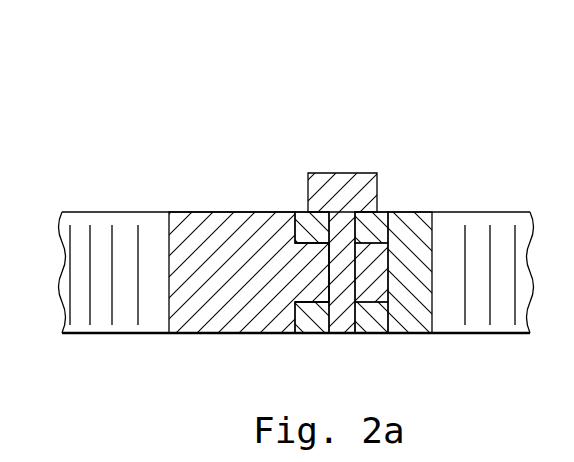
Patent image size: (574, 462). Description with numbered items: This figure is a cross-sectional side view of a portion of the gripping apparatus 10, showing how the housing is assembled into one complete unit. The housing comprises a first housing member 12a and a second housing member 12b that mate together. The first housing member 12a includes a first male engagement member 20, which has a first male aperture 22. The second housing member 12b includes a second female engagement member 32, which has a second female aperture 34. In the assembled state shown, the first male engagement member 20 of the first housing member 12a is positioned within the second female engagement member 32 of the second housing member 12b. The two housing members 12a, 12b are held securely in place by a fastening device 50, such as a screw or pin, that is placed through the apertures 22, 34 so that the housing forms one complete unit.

The gripping apparatus 10 is at (424, 91).
The first housing member 12a is at (148, 212).
The second housing member 12b is at (425, 212).
The first male engagement member 20 is at (390, 260).
The first male aperture 22 is at (320, 272).
The second female engagement member 32 is at (295, 222).
The second female aperture 34 is at (373, 228).
The fastening device 50 is at (348, 173).